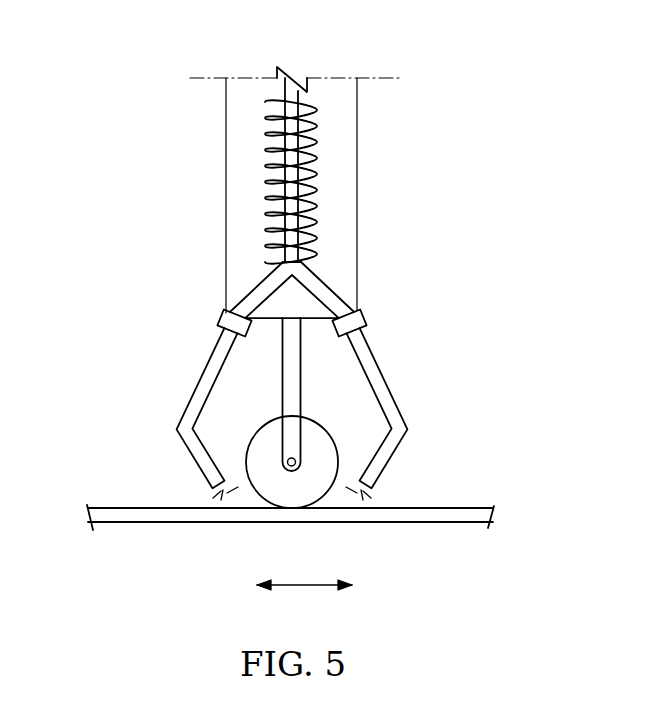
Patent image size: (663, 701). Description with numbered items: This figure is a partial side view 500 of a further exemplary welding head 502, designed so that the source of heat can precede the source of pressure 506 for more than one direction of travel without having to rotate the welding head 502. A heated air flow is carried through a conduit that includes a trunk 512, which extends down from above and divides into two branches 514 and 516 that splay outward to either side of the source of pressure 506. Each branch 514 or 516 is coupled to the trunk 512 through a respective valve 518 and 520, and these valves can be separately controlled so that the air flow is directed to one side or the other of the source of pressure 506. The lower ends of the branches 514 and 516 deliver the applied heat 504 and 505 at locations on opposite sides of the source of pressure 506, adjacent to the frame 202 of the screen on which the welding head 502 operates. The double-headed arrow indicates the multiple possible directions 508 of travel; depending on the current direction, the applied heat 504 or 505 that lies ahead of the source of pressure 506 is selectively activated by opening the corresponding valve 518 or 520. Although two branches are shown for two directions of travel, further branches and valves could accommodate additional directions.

The partial side view 500 is at (95, 70).
The welding head 502 is at (241, 177).
The trunk 512 is at (290, 238).
The valve 520 is at (222, 312).
The valve 518 is at (363, 311).
The branch 516 is at (206, 378).
The branch 514 is at (386, 378).
The source of pressure 506 is at (291, 510).
The applied heat 505 is at (218, 497).
The applied heat 504 is at (366, 497).
The frame 202 is at (219, 523).
The directions of travel 508 is at (302, 589).